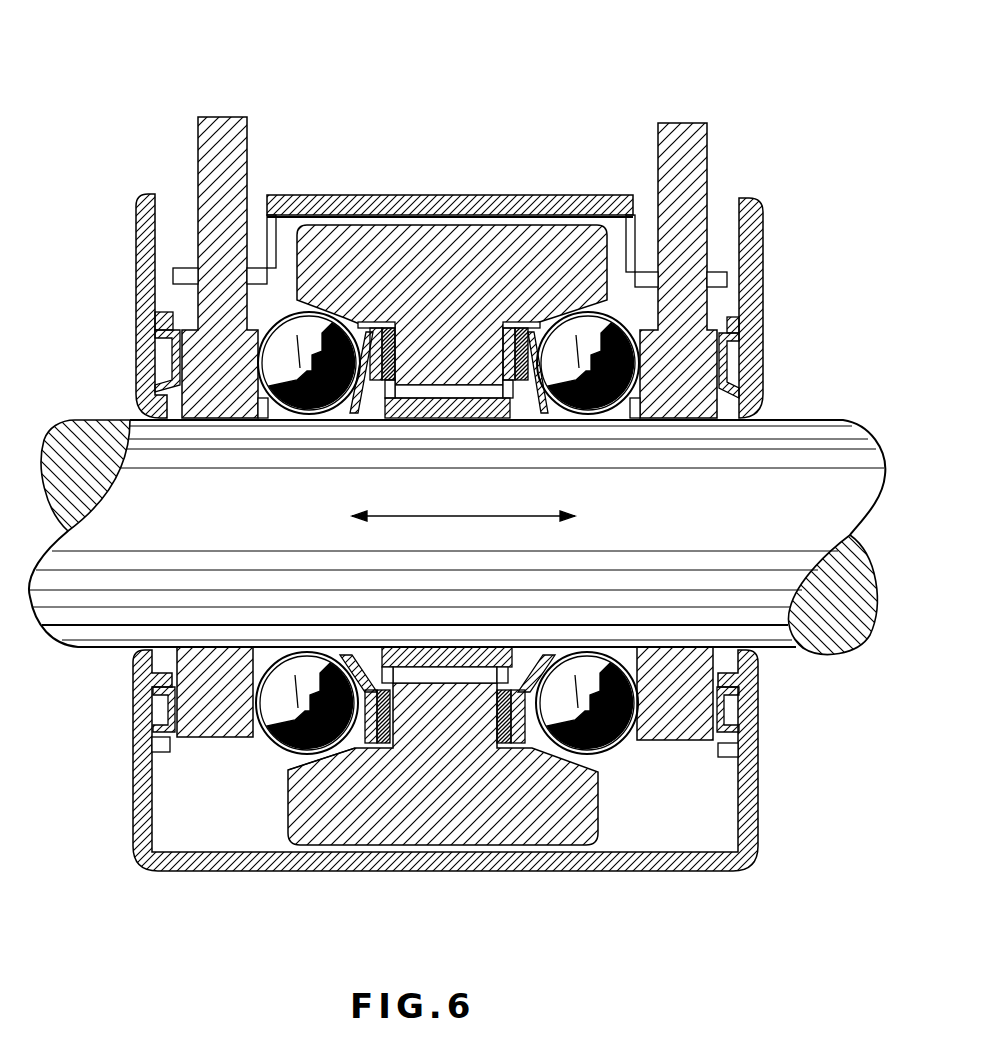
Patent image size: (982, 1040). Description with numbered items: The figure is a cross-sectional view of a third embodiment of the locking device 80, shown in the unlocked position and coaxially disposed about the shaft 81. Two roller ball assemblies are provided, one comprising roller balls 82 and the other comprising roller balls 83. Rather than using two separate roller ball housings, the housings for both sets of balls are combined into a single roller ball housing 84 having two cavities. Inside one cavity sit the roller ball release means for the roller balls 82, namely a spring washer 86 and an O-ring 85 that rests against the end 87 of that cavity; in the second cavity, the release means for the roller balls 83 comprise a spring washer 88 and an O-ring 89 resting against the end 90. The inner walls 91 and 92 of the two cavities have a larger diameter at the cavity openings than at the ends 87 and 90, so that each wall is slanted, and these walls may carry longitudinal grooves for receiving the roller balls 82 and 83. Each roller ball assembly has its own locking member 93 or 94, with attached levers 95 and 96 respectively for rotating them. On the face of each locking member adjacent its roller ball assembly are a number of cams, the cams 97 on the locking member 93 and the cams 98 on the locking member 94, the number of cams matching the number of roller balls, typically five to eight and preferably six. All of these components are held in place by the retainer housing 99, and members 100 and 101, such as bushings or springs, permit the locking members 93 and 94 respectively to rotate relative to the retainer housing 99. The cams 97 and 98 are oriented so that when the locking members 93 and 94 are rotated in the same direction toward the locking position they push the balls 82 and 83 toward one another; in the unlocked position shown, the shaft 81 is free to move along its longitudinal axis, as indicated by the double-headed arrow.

The locking device 80 is at (436, 92).
The shaft 81 is at (790, 445).
The roller balls 82 is at (580, 410).
The roller balls 83 is at (316, 405).
The roller ball housing 84 is at (417, 250).
The O-ring 85 is at (527, 735).
The spring washer 86 is at (548, 842).
The end 87 is at (497, 736).
The spring washer 88 is at (355, 748).
The O-ring 89 is at (360, 876).
The end 90 is at (390, 722).
The inner wall 91 is at (563, 313).
The inner wall 92 is at (330, 314).
The locking member 93 is at (708, 180).
The locking member 94 is at (208, 743).
The lever 95 is at (688, 142).
The lever 96 is at (222, 143).
The cams 97 is at (626, 405).
The cams 98 is at (268, 407).
The retainer housing 99 is at (764, 262).
The member 100 is at (743, 368).
The member 101 is at (153, 352).